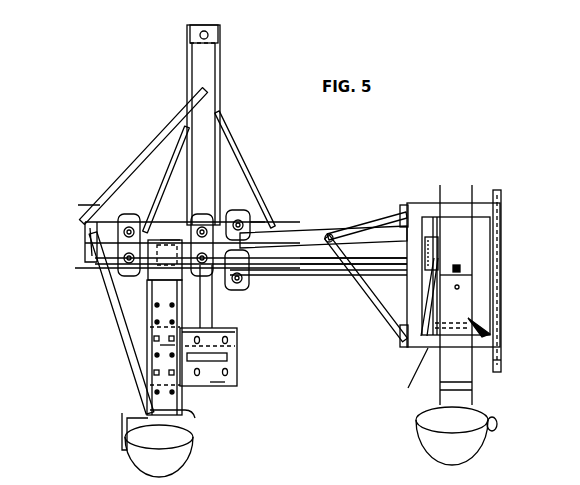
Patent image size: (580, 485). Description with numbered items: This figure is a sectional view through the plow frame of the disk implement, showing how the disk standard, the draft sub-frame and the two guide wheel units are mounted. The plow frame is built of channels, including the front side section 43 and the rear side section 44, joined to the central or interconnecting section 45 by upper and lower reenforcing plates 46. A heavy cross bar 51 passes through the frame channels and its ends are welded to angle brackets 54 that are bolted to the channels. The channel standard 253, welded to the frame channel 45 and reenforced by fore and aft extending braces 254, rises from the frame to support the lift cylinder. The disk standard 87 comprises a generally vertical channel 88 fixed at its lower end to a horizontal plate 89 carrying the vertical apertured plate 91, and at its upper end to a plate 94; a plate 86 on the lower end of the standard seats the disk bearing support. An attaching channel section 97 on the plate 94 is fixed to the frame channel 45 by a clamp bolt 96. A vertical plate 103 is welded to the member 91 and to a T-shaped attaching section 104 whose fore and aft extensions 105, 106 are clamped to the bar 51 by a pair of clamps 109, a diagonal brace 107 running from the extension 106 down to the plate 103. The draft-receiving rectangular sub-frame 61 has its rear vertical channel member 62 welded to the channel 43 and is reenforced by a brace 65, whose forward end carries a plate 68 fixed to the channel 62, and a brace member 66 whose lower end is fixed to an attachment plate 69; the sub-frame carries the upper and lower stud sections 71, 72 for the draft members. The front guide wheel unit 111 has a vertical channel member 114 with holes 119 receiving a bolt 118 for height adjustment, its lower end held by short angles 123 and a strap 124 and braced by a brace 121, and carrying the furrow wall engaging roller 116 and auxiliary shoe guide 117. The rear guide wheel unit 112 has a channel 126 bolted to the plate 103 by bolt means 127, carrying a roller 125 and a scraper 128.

The channel standard 253 is at (209, 72).
The fore and aft extending braces 254 is at (170, 165).
The rear attaching plate extension 106 is at (113, 222).
The rear side section 44 is at (83, 236).
The angle brackets 54 is at (88, 270).
The upper and lower reenforcing plates 46 is at (98, 210).
The clamps 109 is at (129, 230).
The T-shaped attaching section 104 is at (162, 224).
The front attaching plate extension 105 is at (210, 230).
The clamp bolt 96 is at (246, 223).
The cross bar 51 is at (272, 243).
The brace 65 is at (362, 226).
The central or interconnecting section 45 is at (300, 270).
The attaching channel section 97 is at (283, 272).
The brace member 66 is at (370, 294).
The vertical plate 103 is at (160, 270).
The brace 107 is at (128, 318).
The rear guide wheel unit 112 is at (135, 390).
The bolt means 127 is at (148, 352).
The scraper 128 is at (124, 422).
The channel 126 is at (195, 418).
The roller 125 is at (182, 465).
The channel 88 is at (215, 304).
The plate 94 is at (204, 300).
The plate 86 is at (222, 358).
The plate 89 is at (238, 342).
The disk standard 87 is at (240, 318).
The vertical apertured plate 91 is at (210, 384).
The draft-receiving rectangular sub-frame 61 is at (417, 190).
The plate 68 is at (405, 212).
The attachment plate 69 is at (398, 344).
The rear vertical channel member 62 is at (412, 300).
The front side section 43 is at (435, 252).
The bolt 118 is at (462, 267).
The channel member 114 is at (470, 275).
The holes 119 is at (460, 287).
The strap 124 is at (460, 320).
The brace 121 is at (488, 335).
The upper stud section 71 is at (501, 197).
The lower stud section 72 is at (500, 370).
The front guide wheel unit 111 is at (482, 390).
The short angles 123 is at (430, 346).
The furrow wall engaging roller 116 is at (420, 427).
The auxiliary shoe guide 117 is at (497, 425).